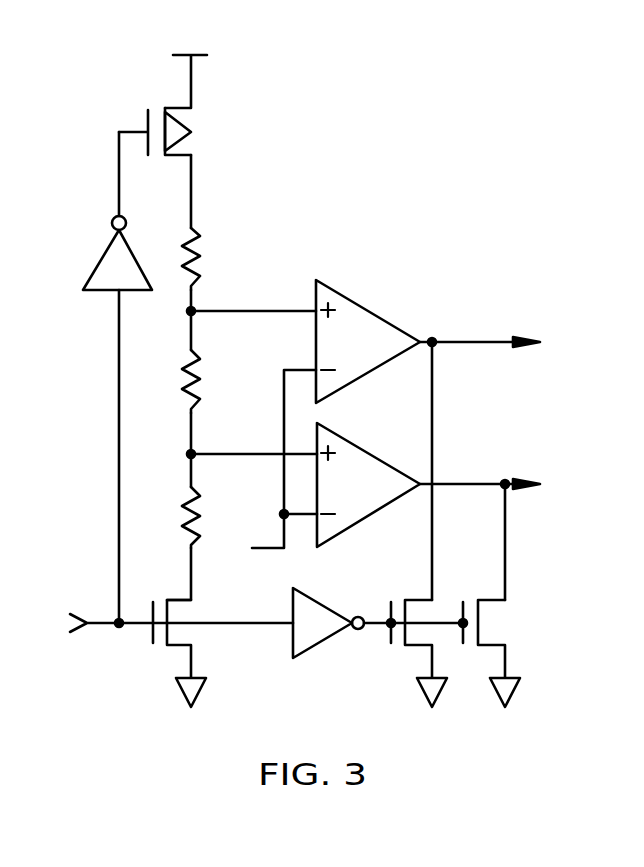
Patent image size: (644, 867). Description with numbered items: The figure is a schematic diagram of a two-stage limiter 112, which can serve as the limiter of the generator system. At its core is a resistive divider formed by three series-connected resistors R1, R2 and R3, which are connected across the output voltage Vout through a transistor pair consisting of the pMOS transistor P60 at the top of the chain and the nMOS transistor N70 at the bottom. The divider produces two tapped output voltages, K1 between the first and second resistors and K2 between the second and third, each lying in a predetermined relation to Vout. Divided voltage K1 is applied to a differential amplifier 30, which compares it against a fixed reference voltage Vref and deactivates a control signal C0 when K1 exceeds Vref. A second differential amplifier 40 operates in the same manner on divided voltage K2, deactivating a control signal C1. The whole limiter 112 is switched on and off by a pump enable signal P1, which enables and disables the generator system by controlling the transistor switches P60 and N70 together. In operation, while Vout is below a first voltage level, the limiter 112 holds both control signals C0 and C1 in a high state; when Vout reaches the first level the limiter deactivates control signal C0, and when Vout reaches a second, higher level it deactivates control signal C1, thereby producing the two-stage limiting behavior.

The two-stage limiter 112 is at (317, 366).
The pMOS transistor P60 is at (155, 117).
The nMOS transistor N70 is at (165, 653).
The resistor R1 is at (207, 259).
The resistor R2 is at (209, 381).
The resistor R3 is at (209, 517).
The divided voltage K1 is at (251, 316).
The divided voltage K2 is at (252, 450).
The differential amplifier 30 is at (373, 353).
The differential amplifier 40 is at (373, 496).
The pump enable signal P1 is at (105, 604).
The control signal C0 is at (498, 341).
The control signal C1 is at (498, 484).